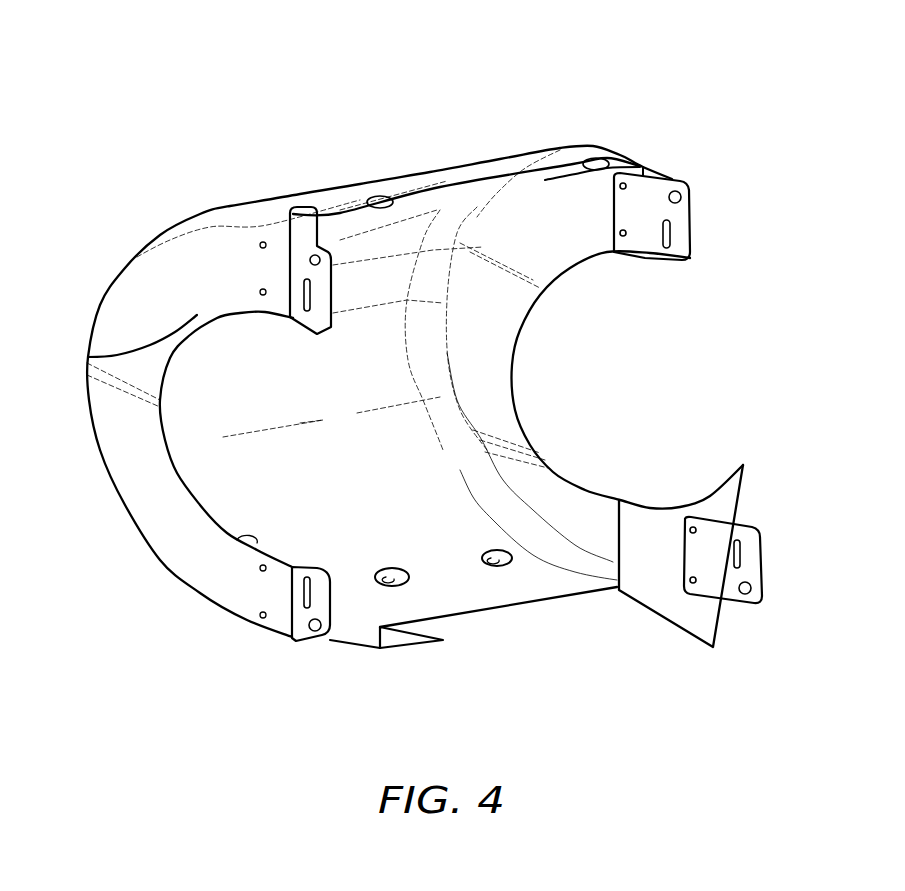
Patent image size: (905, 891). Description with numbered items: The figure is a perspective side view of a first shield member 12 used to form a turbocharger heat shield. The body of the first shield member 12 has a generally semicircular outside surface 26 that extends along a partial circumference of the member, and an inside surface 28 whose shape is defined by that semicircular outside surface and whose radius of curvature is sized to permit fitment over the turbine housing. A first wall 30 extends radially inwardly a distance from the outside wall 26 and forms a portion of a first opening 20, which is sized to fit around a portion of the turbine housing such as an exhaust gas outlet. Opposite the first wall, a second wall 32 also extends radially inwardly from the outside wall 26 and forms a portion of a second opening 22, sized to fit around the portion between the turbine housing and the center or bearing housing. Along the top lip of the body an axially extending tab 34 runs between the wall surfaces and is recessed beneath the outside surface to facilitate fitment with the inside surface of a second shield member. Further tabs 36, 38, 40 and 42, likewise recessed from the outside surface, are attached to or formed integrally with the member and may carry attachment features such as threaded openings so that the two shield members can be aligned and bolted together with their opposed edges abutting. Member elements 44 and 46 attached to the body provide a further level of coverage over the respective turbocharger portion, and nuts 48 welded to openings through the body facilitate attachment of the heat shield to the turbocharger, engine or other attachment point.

The first shield member 12 is at (228, 210).
The first opening 20 is at (197, 590).
The second opening 22 is at (590, 478).
The outside surface 26 is at (173, 225).
The inside surface 28 is at (200, 480).
The first wall 30 is at (88, 357).
The second wall 32 is at (505, 287).
The axially extending tab 34 is at (428, 197).
The tab 36 is at (320, 300).
The tab 38 is at (293, 580).
The tab 40 is at (680, 243).
The tab 42 is at (753, 563).
The member element 44 is at (380, 625).
The member element 46 is at (667, 602).
The nut 48 is at (593, 183).